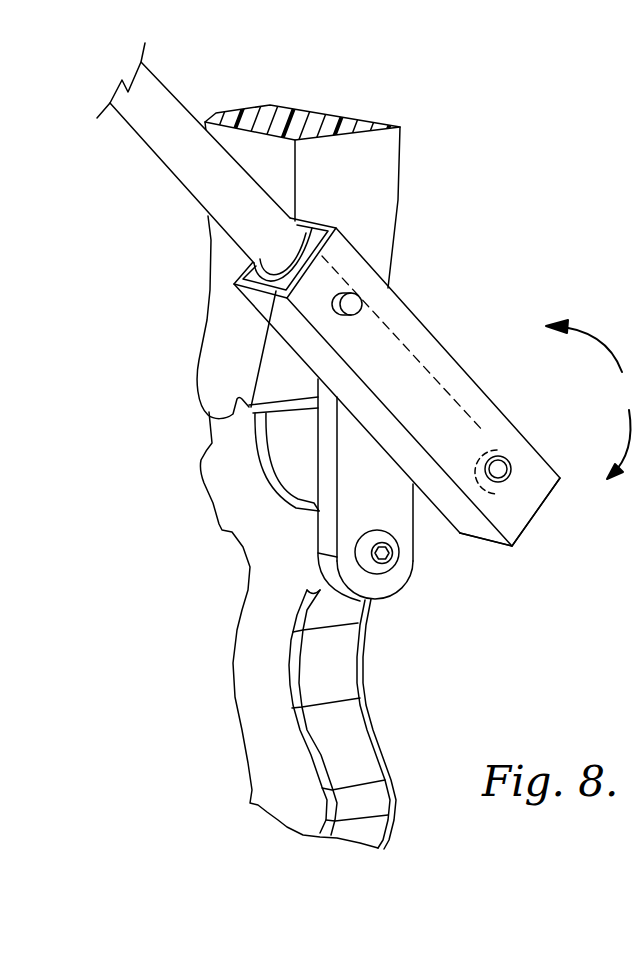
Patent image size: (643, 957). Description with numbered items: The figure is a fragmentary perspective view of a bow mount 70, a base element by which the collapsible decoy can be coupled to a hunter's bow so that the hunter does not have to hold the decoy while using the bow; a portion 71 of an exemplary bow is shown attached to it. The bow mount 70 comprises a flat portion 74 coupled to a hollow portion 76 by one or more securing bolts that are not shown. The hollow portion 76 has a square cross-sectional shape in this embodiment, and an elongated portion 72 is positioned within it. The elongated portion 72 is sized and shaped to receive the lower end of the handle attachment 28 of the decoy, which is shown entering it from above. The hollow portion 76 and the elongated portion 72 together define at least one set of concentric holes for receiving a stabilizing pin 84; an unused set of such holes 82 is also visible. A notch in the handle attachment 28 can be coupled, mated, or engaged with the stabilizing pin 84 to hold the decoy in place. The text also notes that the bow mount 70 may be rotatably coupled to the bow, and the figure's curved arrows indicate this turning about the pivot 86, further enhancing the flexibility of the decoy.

The handle attachment 28 is at (163, 107).
The bow mount 70 is at (594, 399).
The portion of an exemplary bow 71 is at (387, 171).
The elongated portion 72 is at (383, 360).
The flat portion 74 is at (398, 521).
The hollow portion 76 is at (525, 505).
The unused set of concentric holes 82 is at (345, 305).
The stabilizing pin 84 is at (494, 461).
The pivot axis 86 is at (490, 497).